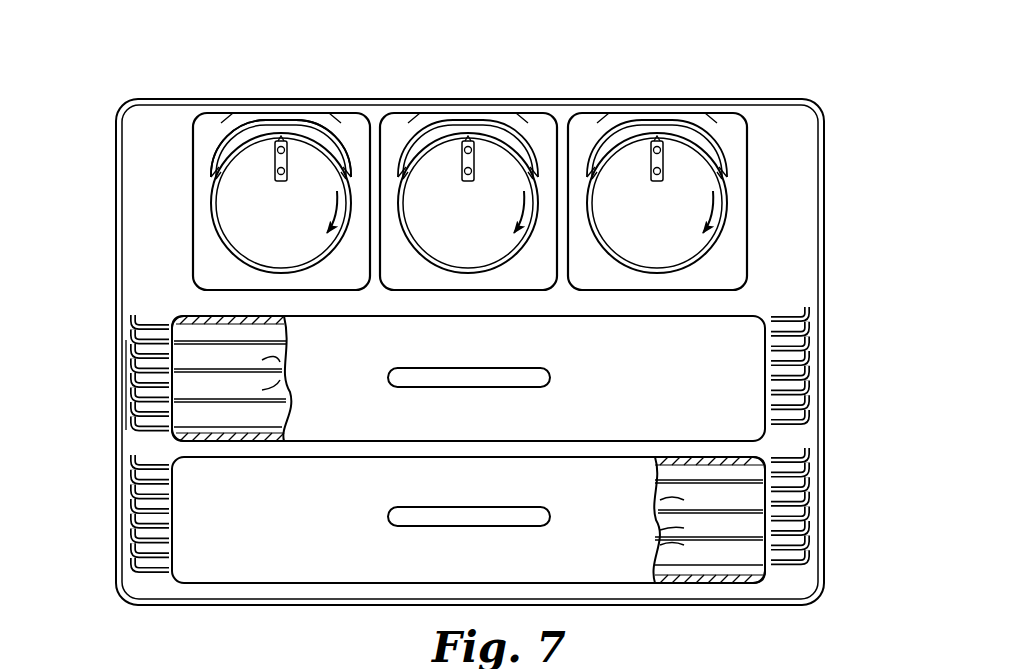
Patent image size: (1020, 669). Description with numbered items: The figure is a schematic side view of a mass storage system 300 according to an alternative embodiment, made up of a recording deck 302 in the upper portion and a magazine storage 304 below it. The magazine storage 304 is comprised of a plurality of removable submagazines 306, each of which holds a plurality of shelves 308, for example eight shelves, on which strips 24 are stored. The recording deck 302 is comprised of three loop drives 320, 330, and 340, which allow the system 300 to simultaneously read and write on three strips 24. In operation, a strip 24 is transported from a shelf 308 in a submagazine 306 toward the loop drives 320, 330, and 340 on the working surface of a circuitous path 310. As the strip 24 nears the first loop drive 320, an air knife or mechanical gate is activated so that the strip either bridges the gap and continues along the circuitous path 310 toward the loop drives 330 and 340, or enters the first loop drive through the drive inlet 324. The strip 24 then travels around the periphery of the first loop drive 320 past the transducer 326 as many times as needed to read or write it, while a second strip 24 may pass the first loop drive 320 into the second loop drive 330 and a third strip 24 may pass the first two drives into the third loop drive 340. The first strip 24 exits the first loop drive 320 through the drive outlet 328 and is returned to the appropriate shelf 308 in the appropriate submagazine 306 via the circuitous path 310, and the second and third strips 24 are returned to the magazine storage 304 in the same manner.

The mass storage system 300 is at (466, 302).
The recording deck 302 is at (543, 152).
The magazine storage 304 is at (475, 445).
The removable submagazine 306 is at (633, 392).
The shelf 308 is at (282, 380).
The circuitous path 310 is at (118, 156).
The first loop drive 320 is at (284, 152).
The drive inlet 324 is at (344, 122).
The transducer 326 is at (284, 182).
The drive outlet 328 is at (224, 122).
The second loop drive 330 is at (452, 108).
The third loop drive 340 is at (632, 110).
The strip 24 is at (126, 386).